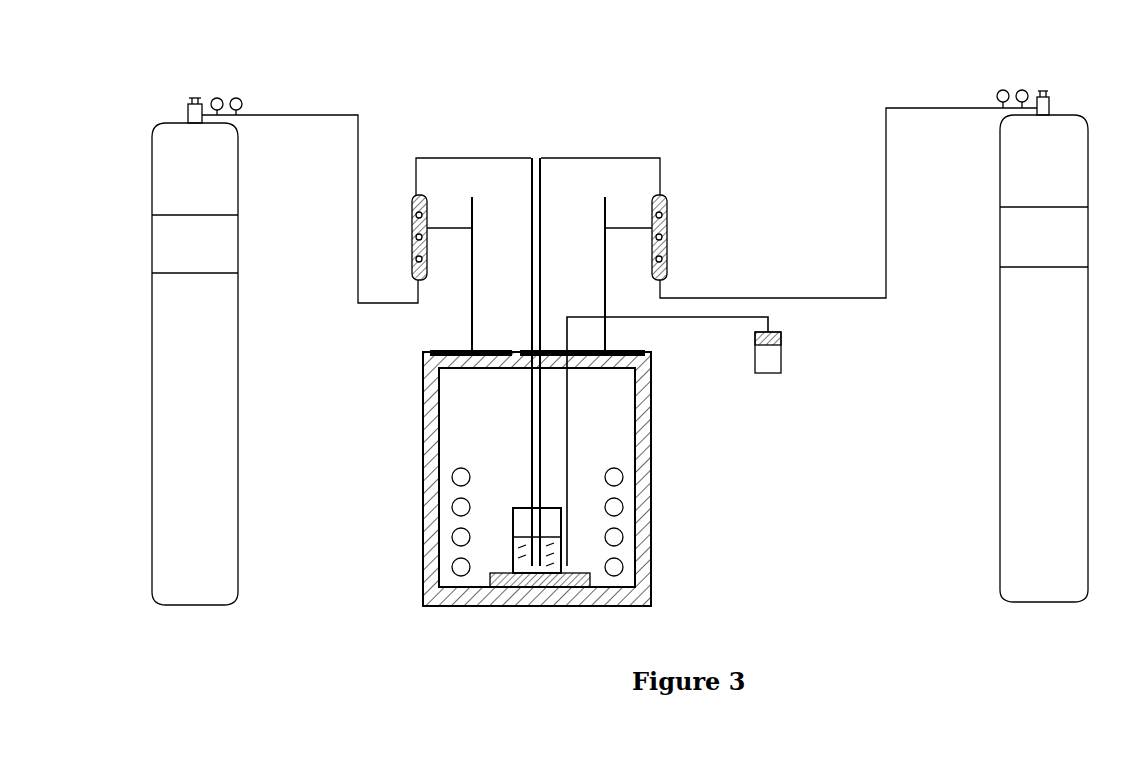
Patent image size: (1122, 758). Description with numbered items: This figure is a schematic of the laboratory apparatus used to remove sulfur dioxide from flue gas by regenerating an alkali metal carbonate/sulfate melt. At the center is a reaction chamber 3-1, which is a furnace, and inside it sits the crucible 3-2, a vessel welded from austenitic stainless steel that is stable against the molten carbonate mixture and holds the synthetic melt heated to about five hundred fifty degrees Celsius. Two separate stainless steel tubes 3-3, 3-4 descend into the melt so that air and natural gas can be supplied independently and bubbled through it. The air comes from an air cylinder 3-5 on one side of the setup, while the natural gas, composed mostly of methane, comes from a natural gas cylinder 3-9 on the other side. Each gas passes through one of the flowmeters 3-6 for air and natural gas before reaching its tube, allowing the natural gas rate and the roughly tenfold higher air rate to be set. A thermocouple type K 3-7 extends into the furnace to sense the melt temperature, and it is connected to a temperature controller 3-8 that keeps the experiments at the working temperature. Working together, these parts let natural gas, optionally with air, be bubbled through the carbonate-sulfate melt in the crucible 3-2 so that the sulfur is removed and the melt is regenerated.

The reaction chamber 3-1 is at (432, 562).
The crucible 3-2 is at (510, 523).
The tube for supplying air 3-3 is at (530, 468).
The tube for supplying natural gas 3-4 is at (426, 362).
The air cylinder 3-5 is at (229, 143).
The flowmeters 3-6 is at (420, 197).
The thermocouple type K 3-7 is at (570, 483).
The temperature controller 3-8 is at (778, 355).
The natural gas cylinder 3-9 is at (1003, 195).